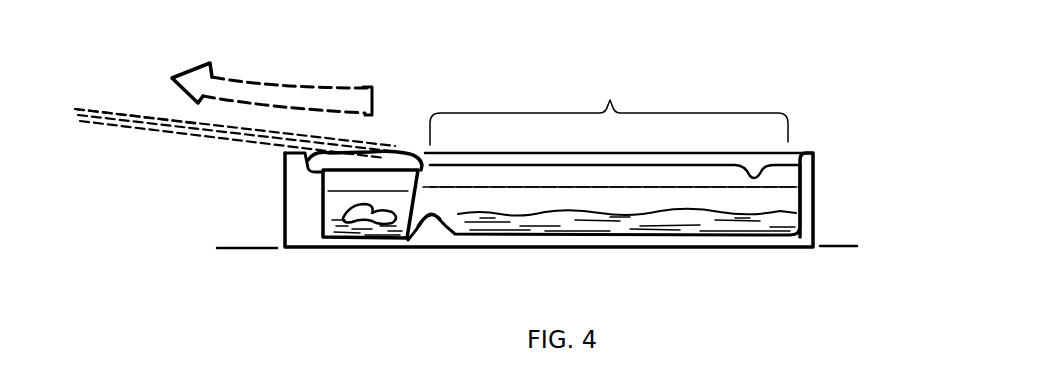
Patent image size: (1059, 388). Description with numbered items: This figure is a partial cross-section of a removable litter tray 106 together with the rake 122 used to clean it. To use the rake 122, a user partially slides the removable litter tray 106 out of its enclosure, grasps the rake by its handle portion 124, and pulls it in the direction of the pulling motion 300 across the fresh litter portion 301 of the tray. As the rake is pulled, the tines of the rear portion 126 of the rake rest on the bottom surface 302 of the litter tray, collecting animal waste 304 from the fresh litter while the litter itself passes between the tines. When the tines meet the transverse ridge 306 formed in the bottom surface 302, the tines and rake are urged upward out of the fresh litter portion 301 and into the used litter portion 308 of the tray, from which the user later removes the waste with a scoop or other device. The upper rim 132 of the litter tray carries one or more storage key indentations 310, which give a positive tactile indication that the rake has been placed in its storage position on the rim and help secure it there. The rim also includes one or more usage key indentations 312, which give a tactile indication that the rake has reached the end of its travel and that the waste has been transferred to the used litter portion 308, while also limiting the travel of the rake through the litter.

The removable litter tray 106 is at (824, 190).
The rake 122 is at (128, 141).
The handle portion 124 is at (85, 102).
The rear portion 126 is at (420, 196).
The upper rim 132 is at (647, 165).
The pulling direction 300 is at (338, 108).
The fresh litter portion 301 is at (609, 110).
The bottom surface 302 is at (640, 218).
The animal waste 304 is at (370, 195).
The transverse ridge 306 is at (449, 232).
The used litter portion 308 is at (425, 232).
The storage key indentation 310 is at (745, 176).
The usage key indentation 312 is at (390, 153).